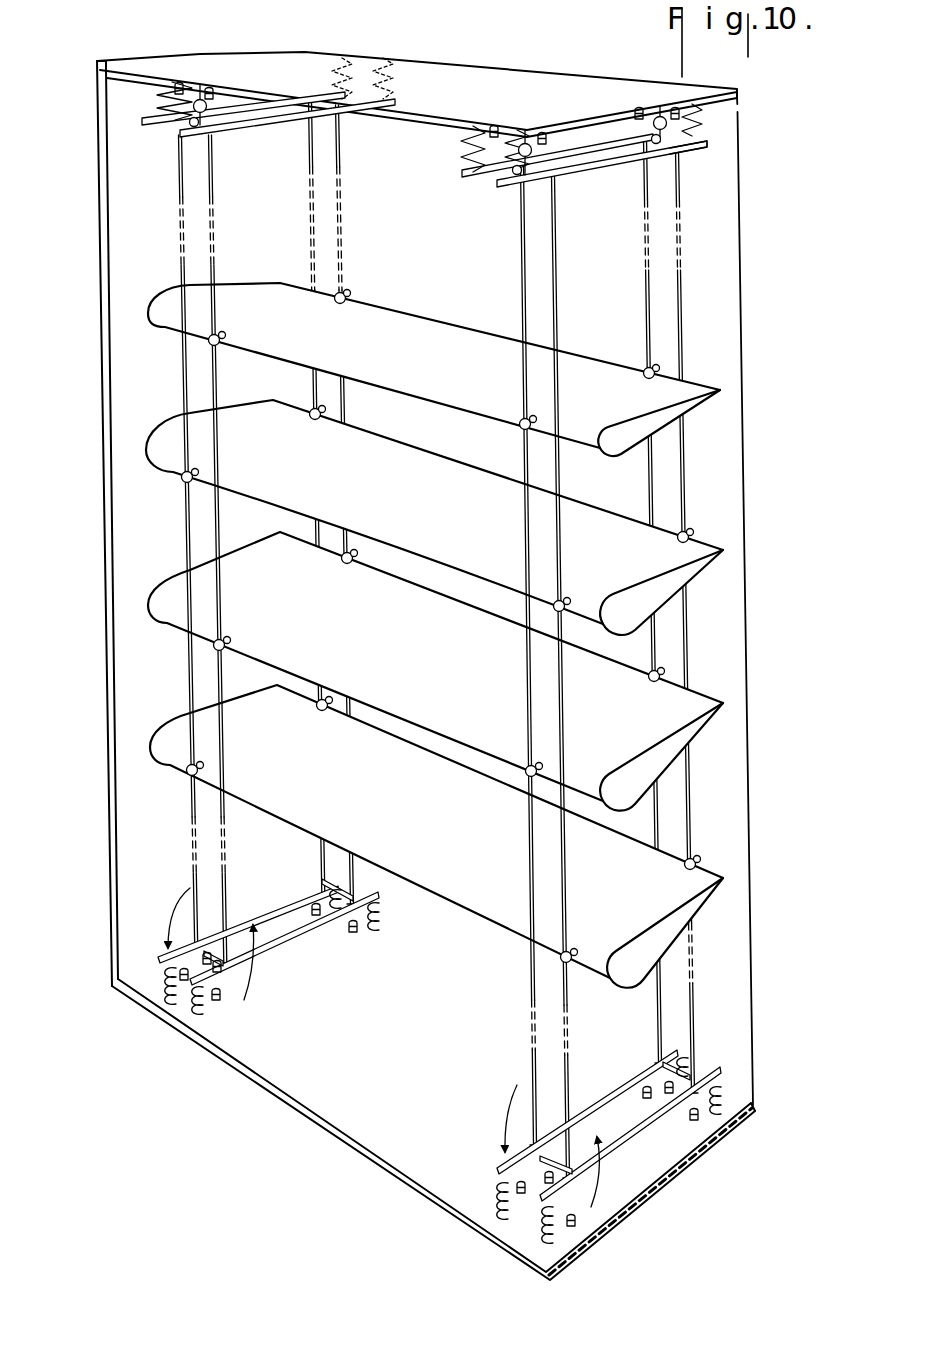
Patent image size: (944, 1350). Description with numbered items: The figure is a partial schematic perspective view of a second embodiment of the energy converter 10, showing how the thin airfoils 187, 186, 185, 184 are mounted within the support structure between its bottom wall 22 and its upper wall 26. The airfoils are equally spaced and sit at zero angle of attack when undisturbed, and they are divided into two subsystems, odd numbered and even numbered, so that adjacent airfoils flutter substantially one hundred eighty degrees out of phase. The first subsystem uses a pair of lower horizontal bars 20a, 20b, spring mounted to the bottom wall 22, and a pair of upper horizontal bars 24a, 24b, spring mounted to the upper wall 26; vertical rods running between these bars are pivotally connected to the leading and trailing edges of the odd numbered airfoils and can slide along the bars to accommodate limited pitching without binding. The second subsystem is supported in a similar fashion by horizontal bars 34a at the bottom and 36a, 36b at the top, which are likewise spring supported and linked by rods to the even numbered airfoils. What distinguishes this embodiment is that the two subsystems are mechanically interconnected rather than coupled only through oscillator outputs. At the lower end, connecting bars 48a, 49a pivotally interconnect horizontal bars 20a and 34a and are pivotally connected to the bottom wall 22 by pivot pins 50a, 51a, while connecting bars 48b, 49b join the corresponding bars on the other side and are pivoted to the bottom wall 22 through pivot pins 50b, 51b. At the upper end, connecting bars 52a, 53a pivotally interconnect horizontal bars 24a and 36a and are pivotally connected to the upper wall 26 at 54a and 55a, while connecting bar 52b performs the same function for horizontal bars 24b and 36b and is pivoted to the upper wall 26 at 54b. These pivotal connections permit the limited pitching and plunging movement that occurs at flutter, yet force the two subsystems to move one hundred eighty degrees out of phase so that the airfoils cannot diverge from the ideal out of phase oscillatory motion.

The energy converter 10 is at (778, 438).
The airfoil 187 is at (625, 445).
The airfoil 186 is at (622, 636).
The airfoil 185 is at (620, 810).
The airfoil 184 is at (630, 985).
The horizontal bar 20a is at (500, 1172).
The horizontal bar 20b is at (278, 950).
The bottom wall 22 is at (300, 1111).
The horizontal bar 24a is at (470, 180).
The horizontal bar 24b is at (298, 122).
The upper wall 26 is at (404, 117).
The horizontal bar 34a is at (650, 1130).
The horizontal bar 36a is at (632, 160).
The horizontal bar 36b is at (150, 125).
The connecting bar 48a is at (545, 1163).
The connecting bar 48b is at (223, 940).
The connecting bar 49a is at (688, 1055).
The connecting bar 49b is at (332, 886).
The pivot pin 50a is at (543, 1195).
The pivot pin 50b is at (215, 975).
The pivot pin 51a is at (647, 1092).
The pivot pin 51b is at (322, 925).
The connecting bar 52a is at (530, 174).
The connecting bar 52b is at (225, 122).
The connecting bar 53a is at (677, 158).
The pivotal connection 54a is at (531, 148).
The pivotal connection 54b is at (207, 104).
The pivotal connection 55a is at (657, 122).